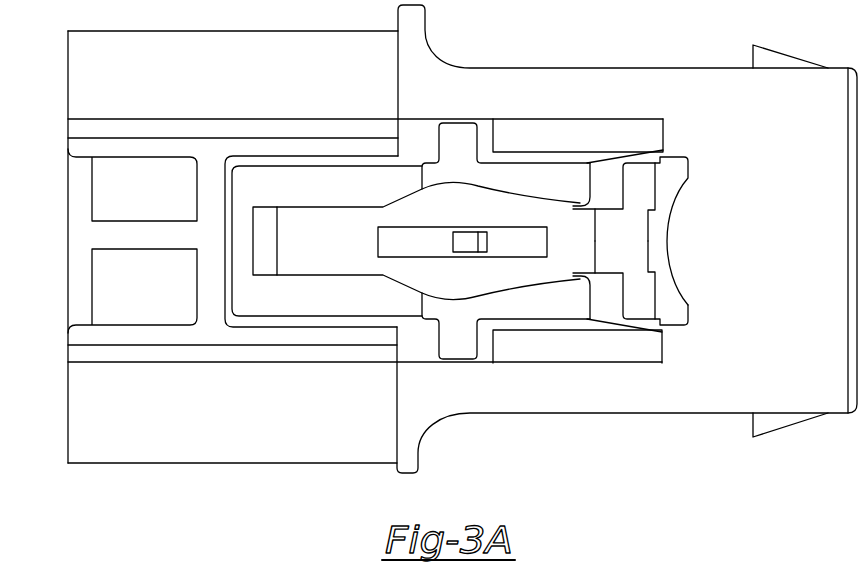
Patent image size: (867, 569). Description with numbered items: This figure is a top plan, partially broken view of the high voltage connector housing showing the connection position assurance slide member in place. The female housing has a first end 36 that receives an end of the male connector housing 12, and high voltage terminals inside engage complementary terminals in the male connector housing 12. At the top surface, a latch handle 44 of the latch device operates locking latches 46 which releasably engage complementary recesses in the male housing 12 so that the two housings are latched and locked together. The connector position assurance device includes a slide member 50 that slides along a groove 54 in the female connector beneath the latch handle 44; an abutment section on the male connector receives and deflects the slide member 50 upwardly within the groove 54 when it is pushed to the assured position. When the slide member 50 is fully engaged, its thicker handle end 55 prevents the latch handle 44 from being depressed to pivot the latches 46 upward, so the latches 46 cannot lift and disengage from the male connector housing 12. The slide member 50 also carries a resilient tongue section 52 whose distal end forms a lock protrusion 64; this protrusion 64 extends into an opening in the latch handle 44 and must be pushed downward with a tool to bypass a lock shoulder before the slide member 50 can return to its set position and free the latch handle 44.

The male connector housing 12 is at (320, 448).
The first end 36 is at (68, 441).
The latch handle 44 is at (637, 134).
The locking latches 46 is at (122, 148).
The slide member 50 is at (610, 235).
The resilient tongue section 52 is at (523, 244).
The groove 54 is at (267, 257).
The thicker handle end 55 is at (640, 302).
The lock protrusion 64 is at (488, 242).